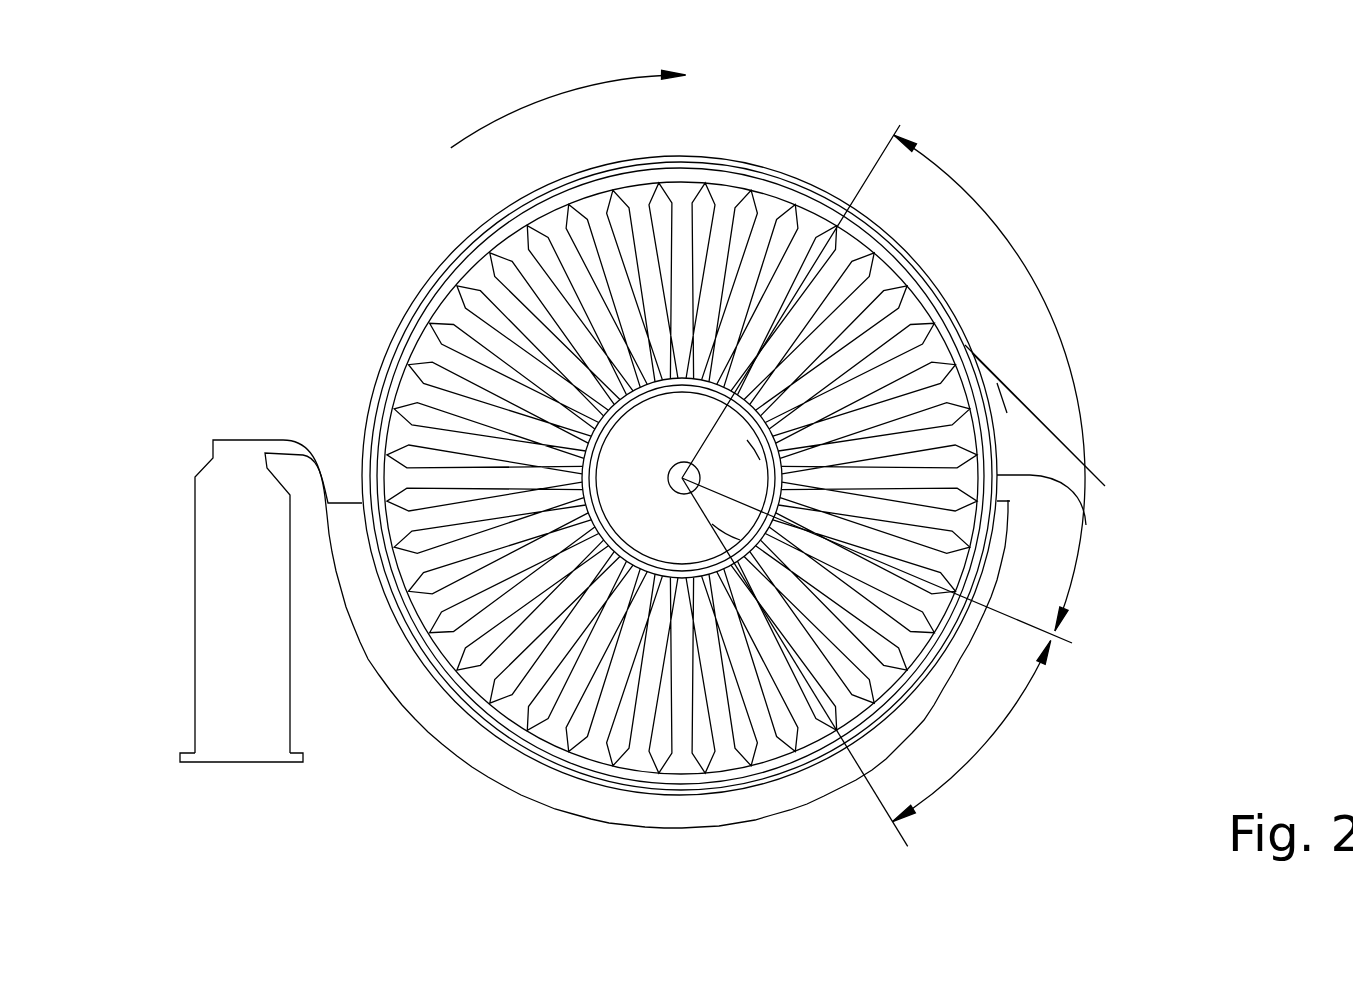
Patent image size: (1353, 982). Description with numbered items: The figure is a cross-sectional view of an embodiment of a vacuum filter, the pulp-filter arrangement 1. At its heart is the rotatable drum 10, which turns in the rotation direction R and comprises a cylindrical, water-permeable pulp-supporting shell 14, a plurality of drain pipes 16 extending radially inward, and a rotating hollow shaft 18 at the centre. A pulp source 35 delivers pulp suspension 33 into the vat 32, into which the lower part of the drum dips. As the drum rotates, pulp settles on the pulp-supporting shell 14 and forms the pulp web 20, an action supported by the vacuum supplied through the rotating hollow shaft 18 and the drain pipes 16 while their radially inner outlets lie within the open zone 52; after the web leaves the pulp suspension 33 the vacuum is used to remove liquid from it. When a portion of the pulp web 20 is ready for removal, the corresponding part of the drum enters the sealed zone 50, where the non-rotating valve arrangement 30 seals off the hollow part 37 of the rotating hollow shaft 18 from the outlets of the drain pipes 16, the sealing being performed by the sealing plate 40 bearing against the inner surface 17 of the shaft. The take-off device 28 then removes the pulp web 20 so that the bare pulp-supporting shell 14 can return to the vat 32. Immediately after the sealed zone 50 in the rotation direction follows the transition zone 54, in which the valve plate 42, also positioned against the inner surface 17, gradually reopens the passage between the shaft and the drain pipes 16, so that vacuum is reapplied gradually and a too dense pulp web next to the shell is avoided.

The pulp-filter arrangement 1 is at (1087, 178).
The rotatable drum 10 is at (737, 176).
The pulp-supporting shell 14 is at (1086, 525).
The drain pipes 16 is at (893, 633).
The inner surface 17 is at (585, 462).
The rotating hollow shaft 18 is at (642, 398).
The pulp web 20 is at (447, 257).
The take-off device 28 is at (983, 348).
The non-rotating valve arrangement 30 is at (676, 479).
The vat 32 is at (803, 808).
The pulp suspension 33 is at (369, 659).
The pulp source 35 is at (203, 520).
The hollow part 37 is at (670, 403).
The sealing plate 40 is at (747, 440).
The valve plate 42 is at (712, 524).
The sealed zone 50 is at (893, 384).
The open zone 52 is at (372, 193).
The transition zone 54 is at (866, 662).